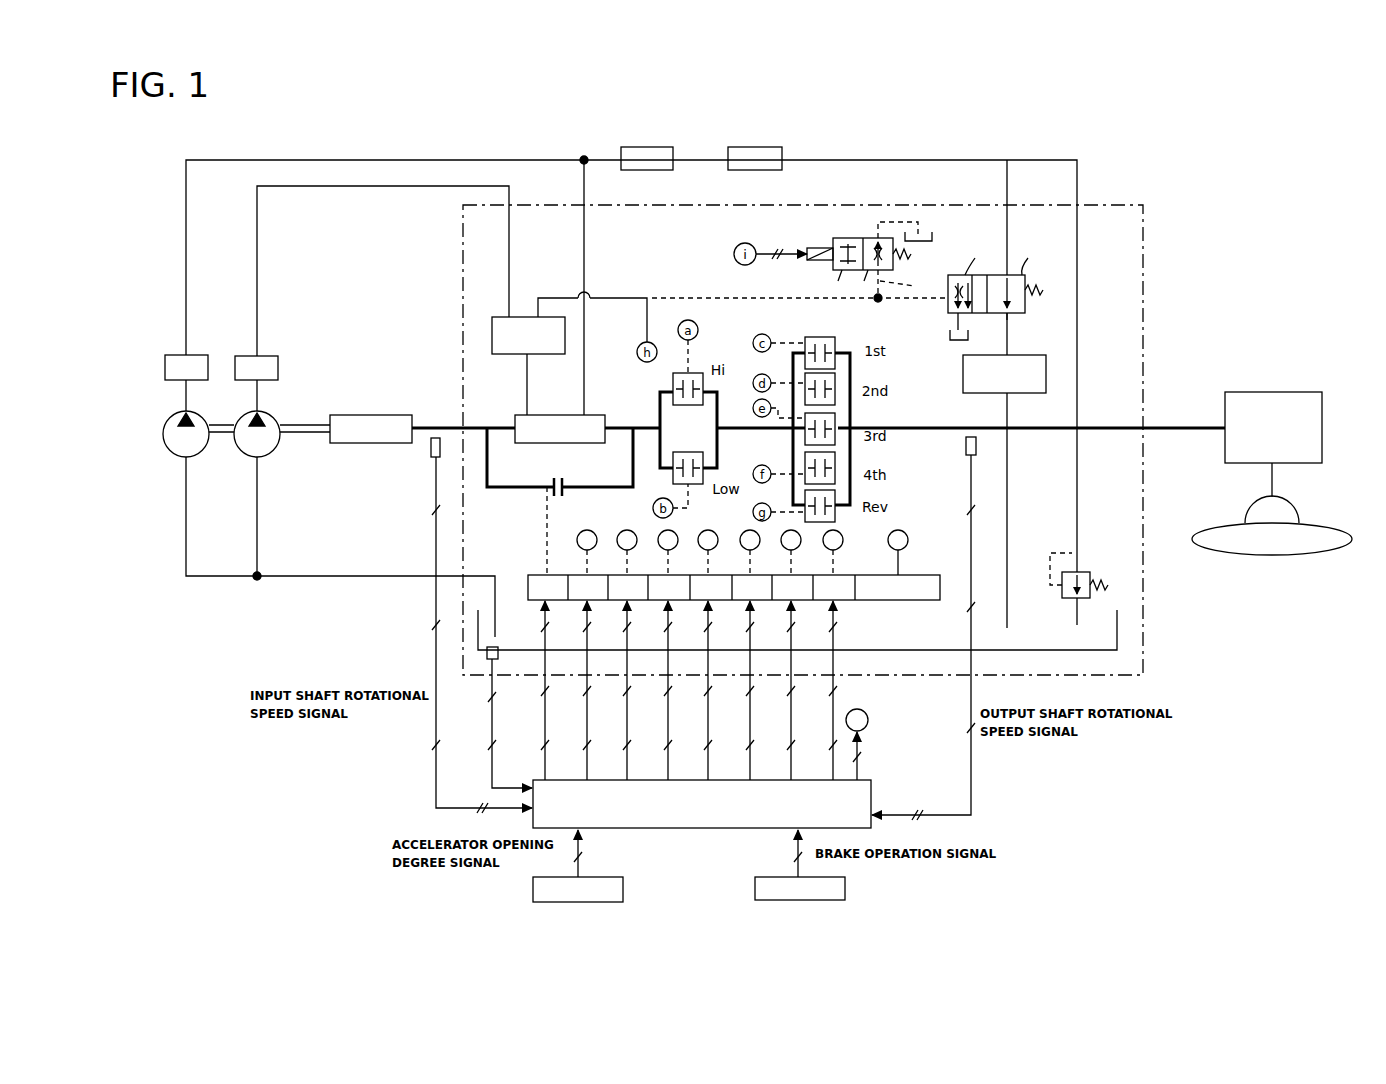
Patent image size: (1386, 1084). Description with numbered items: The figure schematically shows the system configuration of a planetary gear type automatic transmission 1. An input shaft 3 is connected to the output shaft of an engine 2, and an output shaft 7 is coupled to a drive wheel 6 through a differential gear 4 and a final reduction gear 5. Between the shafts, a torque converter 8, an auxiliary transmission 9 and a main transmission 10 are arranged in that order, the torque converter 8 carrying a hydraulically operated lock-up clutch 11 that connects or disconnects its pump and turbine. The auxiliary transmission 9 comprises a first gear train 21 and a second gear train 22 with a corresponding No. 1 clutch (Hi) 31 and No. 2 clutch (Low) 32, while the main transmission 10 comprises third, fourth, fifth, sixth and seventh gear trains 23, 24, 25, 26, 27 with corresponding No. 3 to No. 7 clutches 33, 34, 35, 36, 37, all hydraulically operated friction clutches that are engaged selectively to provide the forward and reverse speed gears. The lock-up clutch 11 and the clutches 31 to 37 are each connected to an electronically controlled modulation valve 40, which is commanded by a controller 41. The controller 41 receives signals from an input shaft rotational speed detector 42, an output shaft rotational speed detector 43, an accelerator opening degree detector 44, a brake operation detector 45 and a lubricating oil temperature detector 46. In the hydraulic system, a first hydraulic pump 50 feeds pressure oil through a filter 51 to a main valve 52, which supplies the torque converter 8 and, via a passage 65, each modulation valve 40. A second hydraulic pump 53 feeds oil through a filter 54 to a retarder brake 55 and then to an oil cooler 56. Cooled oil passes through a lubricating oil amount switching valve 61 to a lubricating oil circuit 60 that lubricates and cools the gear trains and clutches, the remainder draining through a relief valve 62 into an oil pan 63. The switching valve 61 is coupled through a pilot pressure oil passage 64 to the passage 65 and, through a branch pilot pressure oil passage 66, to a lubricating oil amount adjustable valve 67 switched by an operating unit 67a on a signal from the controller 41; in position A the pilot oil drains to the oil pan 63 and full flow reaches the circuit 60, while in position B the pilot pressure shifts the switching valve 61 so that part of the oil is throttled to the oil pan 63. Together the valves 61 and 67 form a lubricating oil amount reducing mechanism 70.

The transmission 1 is at (1147, 232).
The engine 2 is at (375, 415).
The input shaft 3 is at (447, 427).
The differential gear 4 is at (1273, 392).
The final reduction gear 5 is at (1298, 506).
The drive wheel 6 is at (1270, 556).
The output shaft 7 is at (1178, 426).
The torque converter 8 is at (515, 415).
The auxiliary transmission 9 is at (718, 352).
The main transmission 10 is at (823, 332).
The lock-up clutch 11 is at (556, 480).
The first gear train 21 is at (673, 385).
The second gear train 22 is at (672, 479).
The third gear train 23 is at (805, 353).
The fourth gear train 24 is at (812, 385).
The fifth gear train 25 is at (810, 432).
The sixth gear train 26 is at (815, 462).
The seventh gear train 27 is at (812, 490).
The No. 1 clutch (Hi) 31 is at (668, 395).
The No. 2 clutch (Low) 32 is at (687, 453).
The No. 3 clutch (1st) 33 is at (828, 350).
The No. 4 clutch (2nd) 34 is at (828, 388).
The No. 5 clutch (3rd) 35 is at (828, 428).
The No. 6 clutch (4th) 36 is at (830, 463).
The No. 7 clutch (Rev) 37 is at (830, 500).
The electronically controlled modulation valve (ECMV) 40 is at (925, 575).
The controller 41 is at (872, 782).
The input shaft rotational speed detector 42 is at (431, 452).
The output shaft rotational speed detector 43 is at (966, 455).
The accelerator opening degree detector 44 is at (533, 880).
The brake operation detector 45 is at (845, 886).
The lubricating oil temperature detector 46 is at (490, 660).
The first hydraulic pump 50 is at (280, 420).
The filter 51 is at (278, 358).
The main valve 52 is at (497, 317).
The second hydraulic pump 53 is at (168, 421).
The filter 54 is at (172, 355).
The retarder brake 55 is at (650, 170).
The oil cooler 56 is at (752, 170).
The lubricating oil circuit 60 is at (1025, 393).
The lubricating oil amount switching valve 61 is at (1020, 313).
The relief valve 62 is at (1083, 572).
The oil pan 63 is at (933, 233).
The pilot pressure oil passage 64 is at (712, 295).
The passage 65 is at (620, 298).
The branch pilot pressure oil passage 66 is at (980, 275).
The lubricating oil amount adjustable valve 67 is at (840, 238).
The operating unit 67a is at (812, 246).
The lubricating oil amount reducing mechanism 70 is at (965, 236).